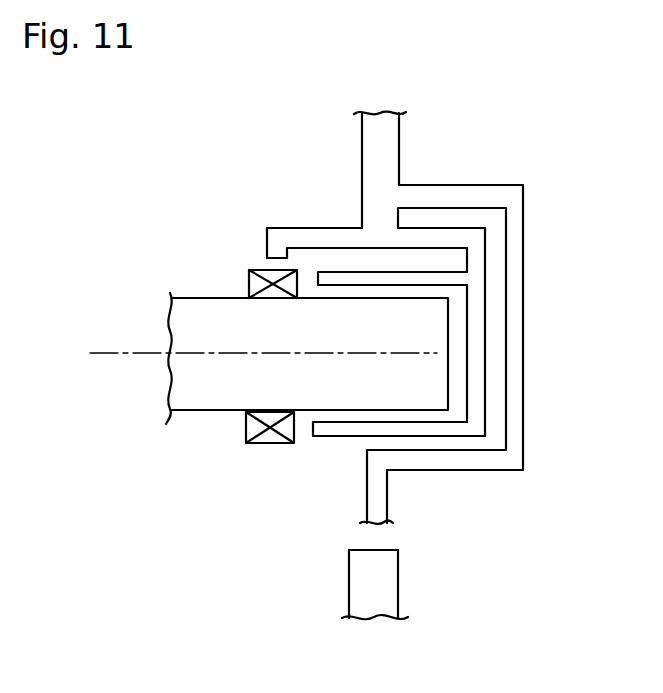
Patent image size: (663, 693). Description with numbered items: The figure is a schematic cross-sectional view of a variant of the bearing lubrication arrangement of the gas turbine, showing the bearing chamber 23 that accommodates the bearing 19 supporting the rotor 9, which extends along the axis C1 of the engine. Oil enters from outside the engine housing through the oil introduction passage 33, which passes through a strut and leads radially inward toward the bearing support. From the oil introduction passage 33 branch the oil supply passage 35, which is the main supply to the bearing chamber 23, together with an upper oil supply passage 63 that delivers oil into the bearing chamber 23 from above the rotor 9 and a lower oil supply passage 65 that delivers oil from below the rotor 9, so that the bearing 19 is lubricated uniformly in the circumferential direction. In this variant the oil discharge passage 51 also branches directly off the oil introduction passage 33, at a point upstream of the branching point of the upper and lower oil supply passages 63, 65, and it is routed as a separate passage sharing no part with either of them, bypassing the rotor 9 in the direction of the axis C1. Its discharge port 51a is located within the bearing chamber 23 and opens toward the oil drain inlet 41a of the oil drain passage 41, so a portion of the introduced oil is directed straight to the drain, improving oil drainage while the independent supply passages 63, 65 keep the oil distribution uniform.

The rotor 9 is at (195, 402).
The bearing 19 is at (250, 281).
The bearing chamber 23 is at (222, 333).
The oil introduction passage 33 is at (390, 138).
The oil supply passage 35 is at (293, 233).
The oil drain passage 41 is at (417, 575).
The oil drain inlet 41a is at (373, 550).
The oil discharge passage 51 is at (418, 326).
The discharge port 51a is at (368, 524).
The upper oil supply passage 63 is at (383, 279).
The lower oil supply passage 65 is at (398, 428).
The axis C1 is at (120, 356).